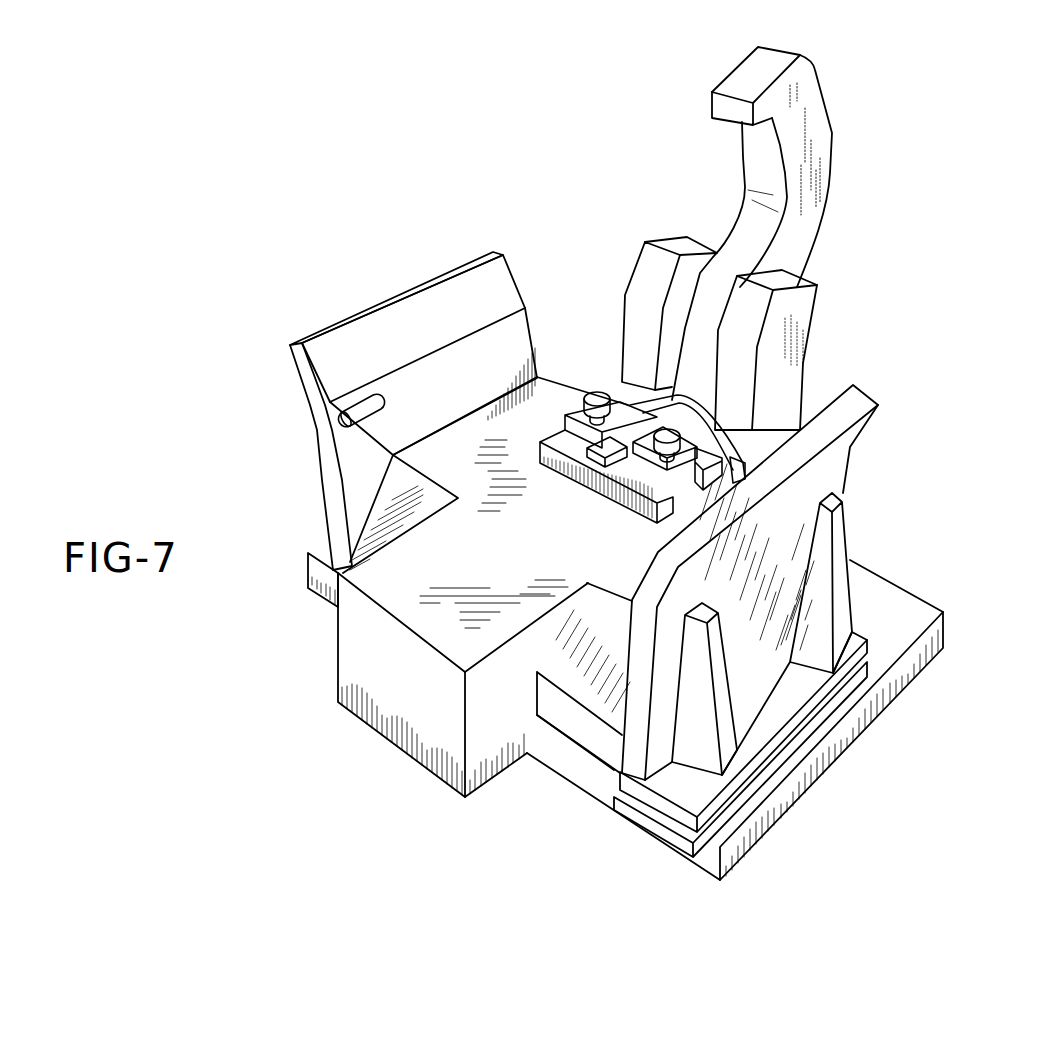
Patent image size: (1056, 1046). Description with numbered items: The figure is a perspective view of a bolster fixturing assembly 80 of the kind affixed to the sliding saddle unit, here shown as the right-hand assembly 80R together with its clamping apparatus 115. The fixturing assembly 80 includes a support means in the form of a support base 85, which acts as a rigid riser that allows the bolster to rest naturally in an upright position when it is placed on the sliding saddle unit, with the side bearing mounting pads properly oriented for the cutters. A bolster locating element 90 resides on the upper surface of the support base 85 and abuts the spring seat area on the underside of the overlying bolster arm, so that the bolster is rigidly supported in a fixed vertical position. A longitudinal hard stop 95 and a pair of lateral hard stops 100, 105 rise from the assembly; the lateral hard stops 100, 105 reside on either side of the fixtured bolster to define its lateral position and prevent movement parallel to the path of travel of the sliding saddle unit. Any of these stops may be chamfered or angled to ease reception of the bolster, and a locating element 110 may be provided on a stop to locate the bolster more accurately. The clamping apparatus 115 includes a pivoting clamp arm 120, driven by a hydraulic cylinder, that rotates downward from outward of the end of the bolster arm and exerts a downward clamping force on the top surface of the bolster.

The fixturing assembly 80 is at (388, 745).
The right seat assembly 80R is at (915, 187).
The support base 85 is at (509, 566).
The bolster locating element 90 is at (590, 386).
The longitudinal hard stop 95 is at (647, 275).
The lateral hard stop 100 is at (460, 298).
The lateral hard stop 105 is at (850, 406).
The locating element 110 is at (353, 413).
The clamping apparatus 115 is at (832, 118).
The pivoting clamp arm 120 is at (758, 153).